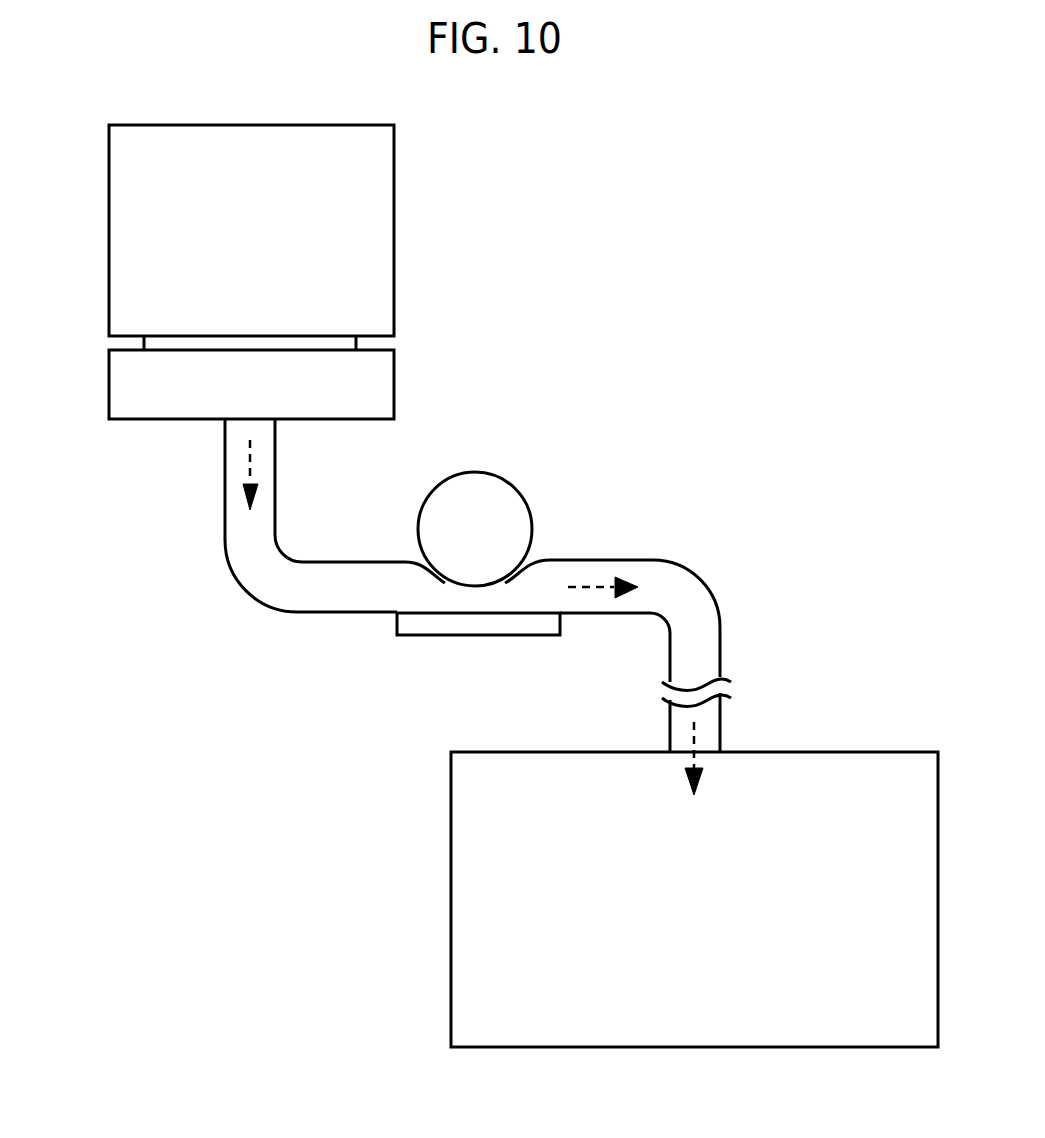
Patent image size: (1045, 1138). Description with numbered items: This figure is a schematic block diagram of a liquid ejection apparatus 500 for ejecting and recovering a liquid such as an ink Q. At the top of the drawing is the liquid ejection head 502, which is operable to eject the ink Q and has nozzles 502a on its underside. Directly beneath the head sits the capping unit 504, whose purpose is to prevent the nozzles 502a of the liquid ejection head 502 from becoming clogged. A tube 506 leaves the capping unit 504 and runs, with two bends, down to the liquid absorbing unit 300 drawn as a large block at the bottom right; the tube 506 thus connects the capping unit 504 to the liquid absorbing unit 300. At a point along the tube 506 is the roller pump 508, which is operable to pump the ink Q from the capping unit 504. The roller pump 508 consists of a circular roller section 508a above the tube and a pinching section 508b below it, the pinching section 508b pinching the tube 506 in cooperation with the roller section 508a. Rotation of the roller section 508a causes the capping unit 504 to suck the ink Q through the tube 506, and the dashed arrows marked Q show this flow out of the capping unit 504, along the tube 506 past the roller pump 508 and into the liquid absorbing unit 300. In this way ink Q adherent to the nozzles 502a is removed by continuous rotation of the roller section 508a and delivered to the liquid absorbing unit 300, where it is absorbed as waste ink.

The liquid absorbing unit 300 is at (488, 885).
The liquid ejection apparatus 500 is at (779, 374).
The liquid ejection head 502 is at (150, 245).
The nozzles 502a is at (317, 337).
The capping unit 504 is at (148, 387).
The tube 506 is at (672, 595).
The roller pump 508 is at (574, 514).
The roller section 508a is at (485, 512).
The pinching section 508b is at (450, 622).
The ink Q is at (248, 472).